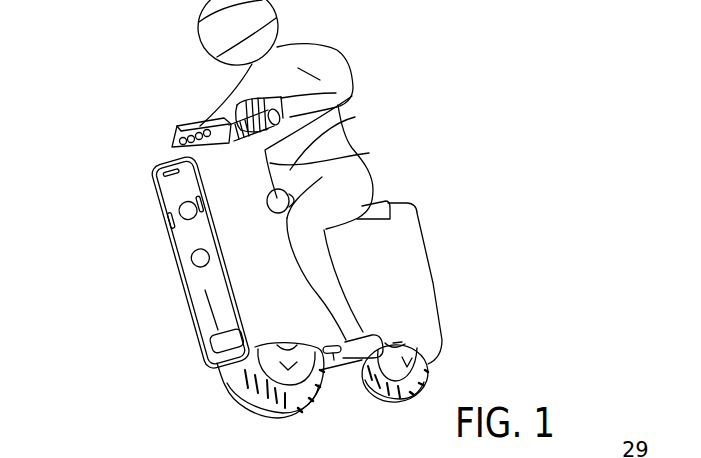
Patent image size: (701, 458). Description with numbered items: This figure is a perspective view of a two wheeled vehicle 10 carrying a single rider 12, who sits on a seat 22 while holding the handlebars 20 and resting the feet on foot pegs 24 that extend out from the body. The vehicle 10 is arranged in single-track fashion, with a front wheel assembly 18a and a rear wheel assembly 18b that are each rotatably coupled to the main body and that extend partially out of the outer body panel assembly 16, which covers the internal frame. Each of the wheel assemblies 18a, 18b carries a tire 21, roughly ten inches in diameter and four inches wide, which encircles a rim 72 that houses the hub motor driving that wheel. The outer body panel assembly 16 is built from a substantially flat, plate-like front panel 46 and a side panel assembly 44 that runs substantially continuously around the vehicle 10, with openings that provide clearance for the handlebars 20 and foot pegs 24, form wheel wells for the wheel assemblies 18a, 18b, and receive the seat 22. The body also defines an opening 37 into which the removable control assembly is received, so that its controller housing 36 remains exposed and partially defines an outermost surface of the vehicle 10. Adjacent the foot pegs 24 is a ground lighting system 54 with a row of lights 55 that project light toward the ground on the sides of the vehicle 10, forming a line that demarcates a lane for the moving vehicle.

The two wheeled vehicle 10 is at (430, 58).
The rider 12 is at (314, 60).
The outer body panel assembly 16 is at (410, 248).
The front wheel assembly 18a is at (230, 395).
The rear wheel assembly 18b is at (428, 378).
The handlebars 20 is at (233, 142).
The tire 21 is at (246, 402).
The seat 22 is at (382, 207).
The foot pegs 24 is at (400, 343).
The controller housing 36 is at (338, 137).
The opening 37 is at (336, 151).
The side panel assembly 44 is at (270, 280).
The front panel 46 is at (213, 315).
The ground lighting system 54 is at (325, 341).
The lights 55 is at (335, 358).
The rim 72 is at (288, 370).